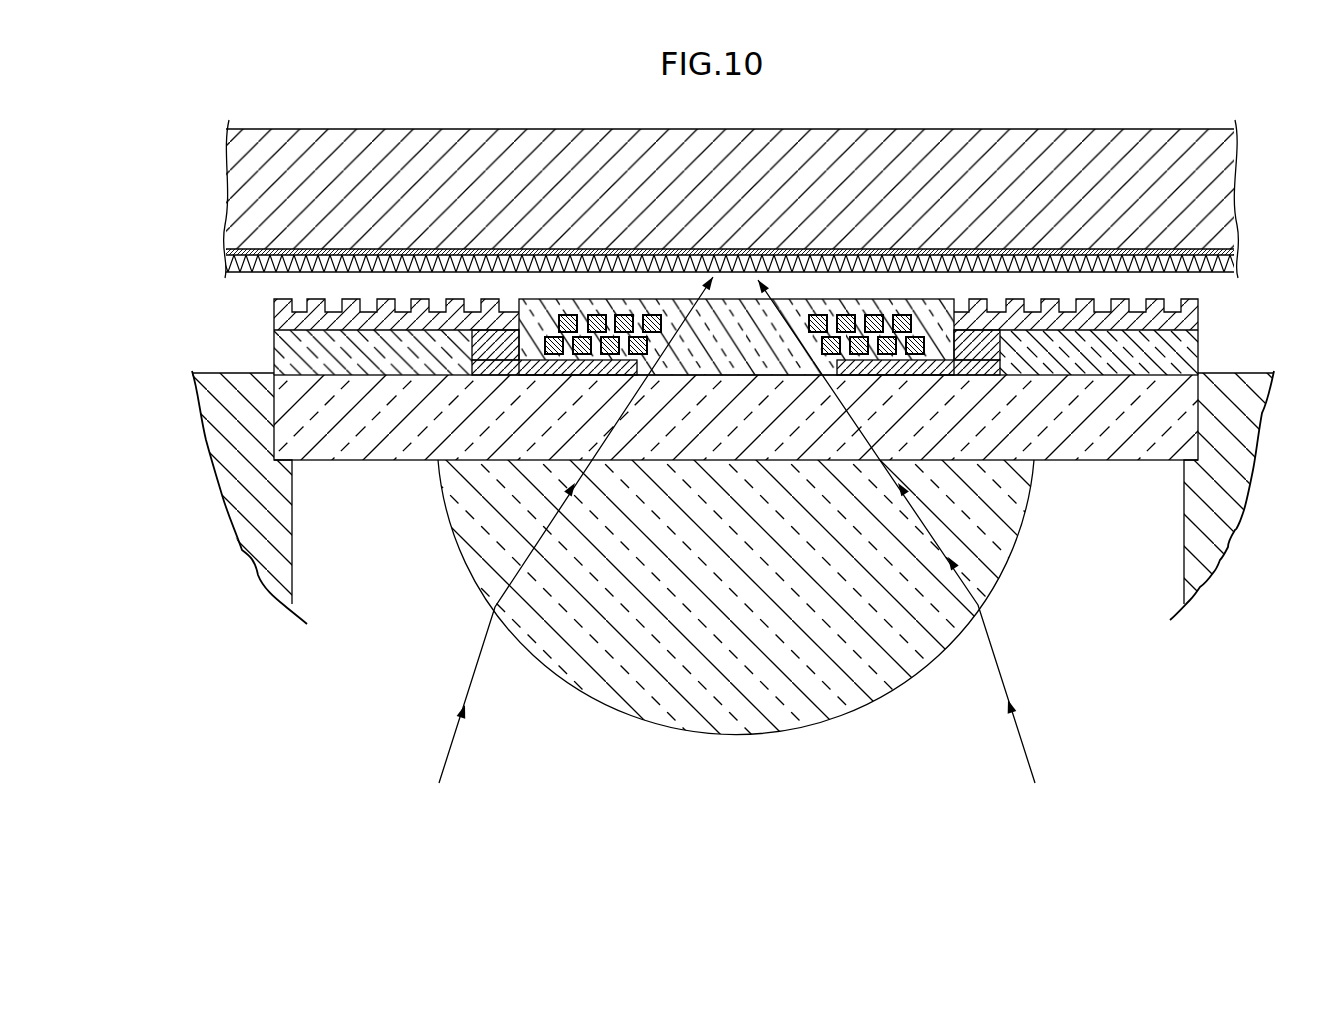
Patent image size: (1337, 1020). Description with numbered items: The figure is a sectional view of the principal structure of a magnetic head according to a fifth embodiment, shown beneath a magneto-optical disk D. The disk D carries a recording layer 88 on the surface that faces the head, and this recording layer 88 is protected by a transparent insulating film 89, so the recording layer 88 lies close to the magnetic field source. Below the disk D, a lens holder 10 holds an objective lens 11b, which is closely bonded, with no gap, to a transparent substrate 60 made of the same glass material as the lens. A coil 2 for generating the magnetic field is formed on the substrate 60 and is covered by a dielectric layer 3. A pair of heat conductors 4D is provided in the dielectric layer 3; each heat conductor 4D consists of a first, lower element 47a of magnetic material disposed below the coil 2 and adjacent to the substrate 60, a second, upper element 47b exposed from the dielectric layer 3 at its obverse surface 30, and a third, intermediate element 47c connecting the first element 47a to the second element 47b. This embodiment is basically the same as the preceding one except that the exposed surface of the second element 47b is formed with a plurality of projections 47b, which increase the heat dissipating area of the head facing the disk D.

The magneto-optical disk D is at (1188, 128).
The recording layer 88 is at (1236, 252).
The transparent insulating film 89 is at (1236, 266).
The heat conductor 4D is at (730, 309).
The second element with projections 47b is at (272, 303).
The dielectric layer 3 is at (1183, 353).
The obverse surface of the dielectric layer 30 is at (810, 299).
The third element 47c is at (476, 348).
The first element 47a is at (504, 370).
The coil 2 is at (911, 324).
The transparent substrate 60 is at (1098, 445).
The objective lens 11b is at (1005, 538).
The lens holder 10 is at (1194, 543).